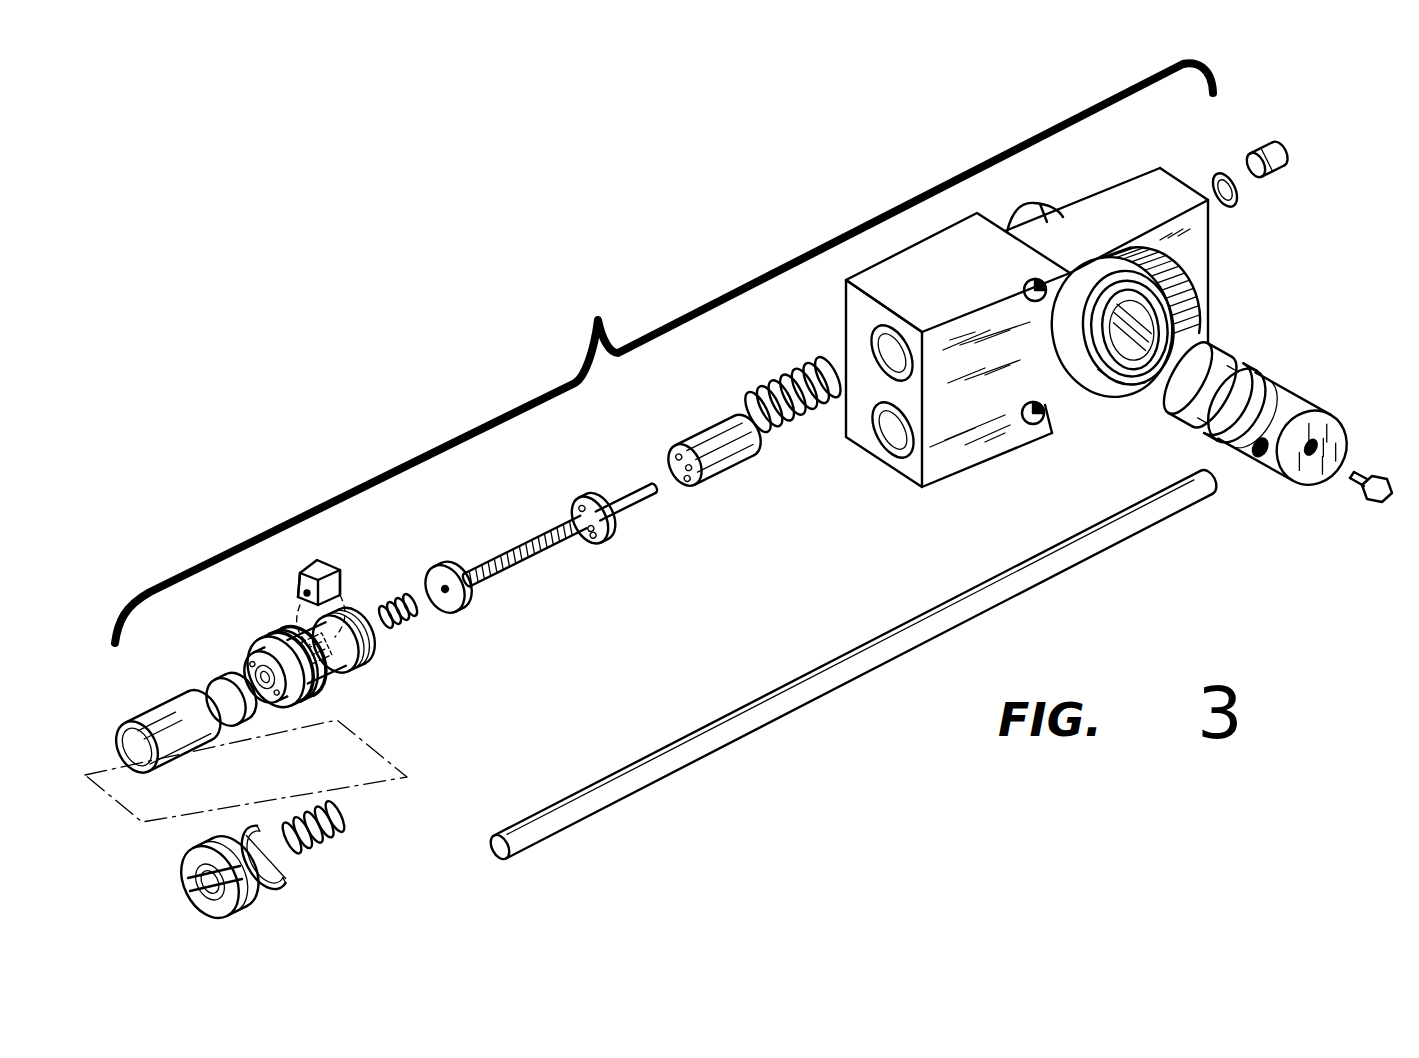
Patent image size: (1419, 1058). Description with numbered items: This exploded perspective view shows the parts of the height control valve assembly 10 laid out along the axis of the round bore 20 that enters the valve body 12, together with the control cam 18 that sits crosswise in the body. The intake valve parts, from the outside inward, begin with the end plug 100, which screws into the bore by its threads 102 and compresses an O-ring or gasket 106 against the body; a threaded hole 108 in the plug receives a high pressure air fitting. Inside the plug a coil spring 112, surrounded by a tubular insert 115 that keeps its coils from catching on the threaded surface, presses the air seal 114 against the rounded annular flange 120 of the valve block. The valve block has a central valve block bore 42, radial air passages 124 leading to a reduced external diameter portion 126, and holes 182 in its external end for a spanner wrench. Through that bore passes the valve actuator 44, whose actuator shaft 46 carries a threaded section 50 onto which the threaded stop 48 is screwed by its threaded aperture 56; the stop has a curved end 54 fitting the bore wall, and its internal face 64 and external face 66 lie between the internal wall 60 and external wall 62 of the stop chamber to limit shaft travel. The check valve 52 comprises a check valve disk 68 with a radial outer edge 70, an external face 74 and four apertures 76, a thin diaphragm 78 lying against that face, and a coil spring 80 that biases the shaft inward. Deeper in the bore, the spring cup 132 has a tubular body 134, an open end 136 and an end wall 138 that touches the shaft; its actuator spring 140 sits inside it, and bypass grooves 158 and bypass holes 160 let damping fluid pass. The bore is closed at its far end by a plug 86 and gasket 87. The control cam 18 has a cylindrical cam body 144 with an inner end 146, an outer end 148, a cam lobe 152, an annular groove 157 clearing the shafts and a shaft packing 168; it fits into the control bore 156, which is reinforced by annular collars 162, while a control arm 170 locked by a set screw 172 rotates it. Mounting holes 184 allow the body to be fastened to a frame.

The height control valve assembly 10 is at (664, 353).
The valve body 12 is at (918, 512).
The control cam 18 is at (1262, 415).
The round bore 20 is at (878, 462).
The central valve block bore 42 is at (315, 672).
The valve actuator 44 is at (632, 468).
The actuator shaft 46 is at (628, 502).
The threaded stop 48 is at (339, 571).
The threaded section of the actuator shaft 50 is at (493, 586).
The check valve 52 is at (578, 478).
The curved end of the stop 54 is at (330, 562).
The threaded aperture 56 is at (297, 577).
The internal wall 60 is at (356, 634).
The external wall 62 is at (300, 628).
The internal face of the stop 64 is at (343, 584).
The external face of the stop 66 is at (306, 589).
The check valve disk 68 is at (587, 564).
The radial outer edge 70 is at (590, 496).
The external face of the check valve disk 74 is at (580, 536).
The apertures 76 is at (576, 504).
The diaphragm 78 is at (446, 572).
The coil spring 80 is at (410, 628).
The plug 86 is at (1284, 172).
The gasket 87 is at (1236, 205).
The end plug 100 is at (240, 905).
The threads 102 is at (245, 838).
The O-ring or gasket 106 is at (296, 870).
The threaded hole 108 is at (188, 866).
The coil spring 112 is at (338, 830).
The air seal 114 is at (215, 696).
The tubular insert 115 is at (166, 723).
The rounded annular flange 120 is at (280, 669).
The radial air passages 124 is at (305, 658).
The reduced external diameter portion 126 is at (344, 640).
The spring cup 132 is at (700, 507).
The tubular body 134 is at (750, 472).
The open end 136 is at (742, 408).
The end wall 138 is at (680, 442).
The actuator spring 140 is at (812, 430).
The cam body 144 is at (1305, 412).
The inner end 146 is at (1216, 348).
The outer end 148 is at (1268, 470).
The cam lobe 152 is at (1230, 364).
The control bore 156 is at (1142, 385).
The annular groove 157 is at (1200, 430).
The bypass grooves 158 is at (718, 428).
The bypass holes 160 is at (682, 482).
The annular collars 162 is at (1040, 210).
The shaft packing 168 is at (1125, 388).
The control arm 170 is at (938, 640).
The set screw 172 is at (1368, 500).
The holes 182 is at (266, 678).
The mounting holes 184 is at (1035, 445).